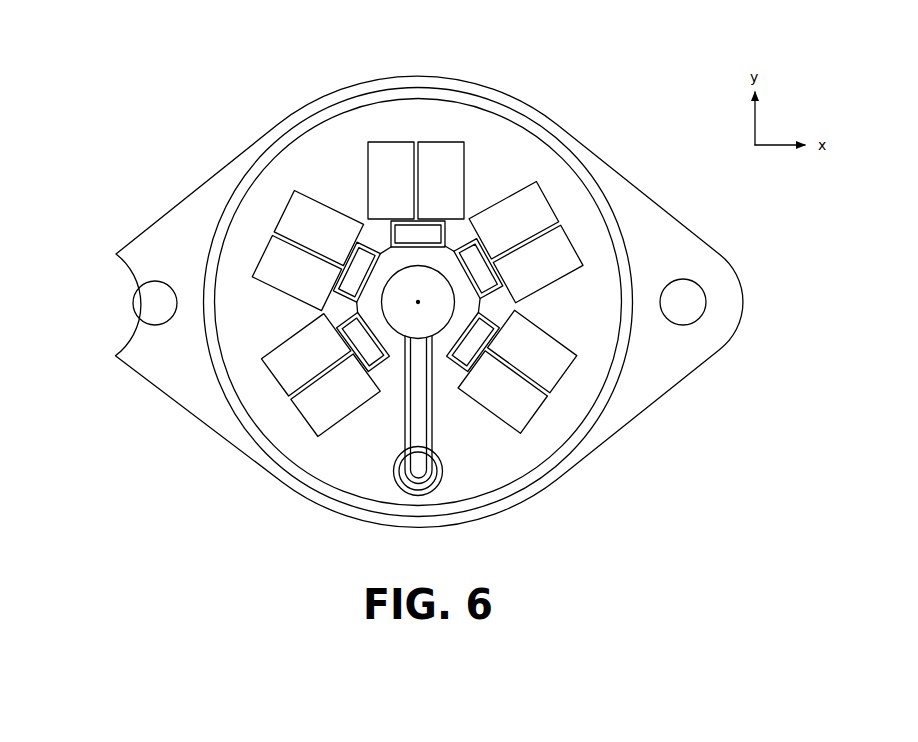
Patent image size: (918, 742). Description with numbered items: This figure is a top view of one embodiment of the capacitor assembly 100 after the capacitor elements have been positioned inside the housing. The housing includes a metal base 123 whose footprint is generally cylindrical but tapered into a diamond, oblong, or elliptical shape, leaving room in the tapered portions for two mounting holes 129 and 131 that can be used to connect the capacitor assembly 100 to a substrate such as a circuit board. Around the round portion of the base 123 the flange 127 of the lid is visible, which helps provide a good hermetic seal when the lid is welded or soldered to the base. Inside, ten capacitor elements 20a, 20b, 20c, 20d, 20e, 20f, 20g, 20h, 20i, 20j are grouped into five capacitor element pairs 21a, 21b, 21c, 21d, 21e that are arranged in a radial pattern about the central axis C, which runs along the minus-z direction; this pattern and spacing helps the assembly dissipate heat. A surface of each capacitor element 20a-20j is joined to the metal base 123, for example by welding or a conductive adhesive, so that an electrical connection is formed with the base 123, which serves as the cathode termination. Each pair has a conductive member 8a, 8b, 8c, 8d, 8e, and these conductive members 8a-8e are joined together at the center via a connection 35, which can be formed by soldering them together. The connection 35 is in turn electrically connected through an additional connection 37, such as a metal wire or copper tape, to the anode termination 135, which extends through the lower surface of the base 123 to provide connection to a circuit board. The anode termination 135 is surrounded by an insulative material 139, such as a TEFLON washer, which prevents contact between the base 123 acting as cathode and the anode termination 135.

The capacitor assembly 100 is at (173, 157).
The base 123 is at (197, 248).
The flange 127 is at (326, 113).
The mounting hole 129 is at (150, 308).
The mounting hole 131 is at (688, 302).
The connection 35 is at (429, 302).
The central axis C is at (418, 298).
The connection 37 is at (432, 404).
The anode termination 135 is at (400, 466).
The insulative material 139 is at (440, 482).
The capacitor element pair 21a is at (476, 183).
The capacitor element pair 21b is at (572, 293).
The capacitor element pair 21c is at (488, 430).
The capacitor element pair 21d is at (346, 428).
The capacitor element pair 21e is at (262, 294).
The capacitor element 20a is at (404, 190).
The capacitor element 20b is at (454, 190).
The capacitor element 20c is at (514, 221).
The capacitor element 20d is at (538, 264).
The capacitor element 20e is at (532, 351).
The capacitor element 20f is at (502, 392).
The capacitor element 20g is at (335, 395).
The capacitor element 20h is at (306, 355).
The capacitor element 20i is at (296, 273).
The capacitor element 20j is at (318, 228).
The conductive member 8a is at (405, 244).
The conductive member 8b is at (478, 269).
The conductive member 8c is at (473, 342).
The conductive member 8d is at (363, 342).
The conductive member 8e is at (356, 272).